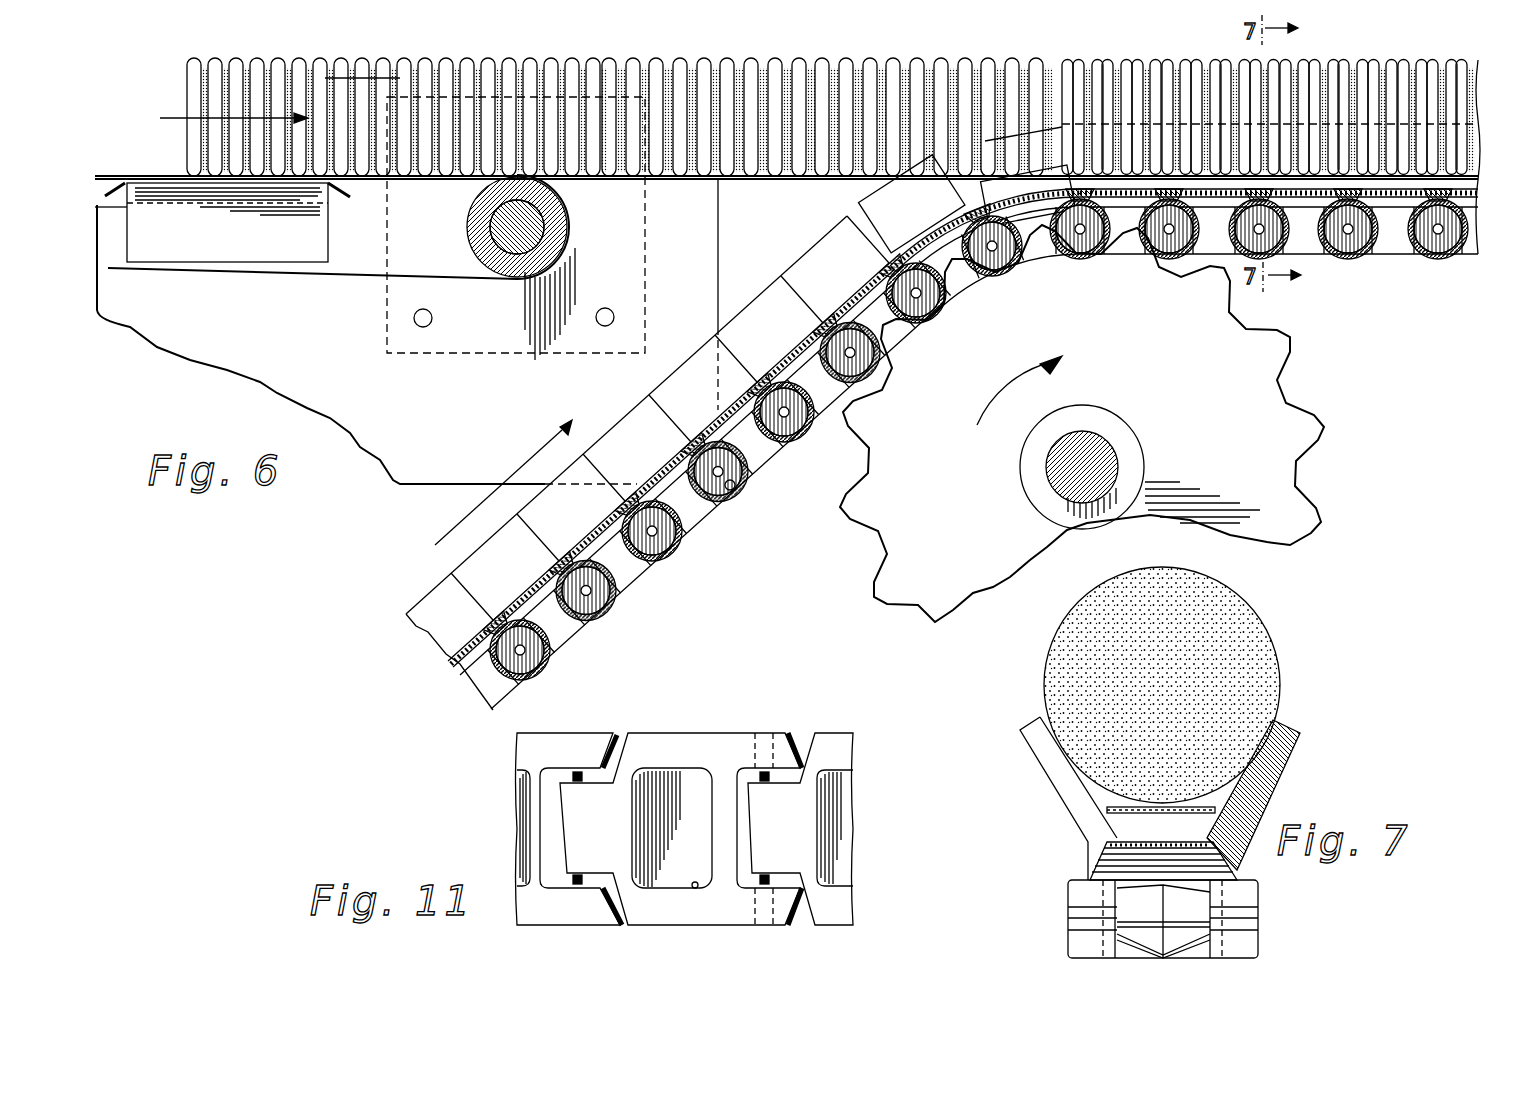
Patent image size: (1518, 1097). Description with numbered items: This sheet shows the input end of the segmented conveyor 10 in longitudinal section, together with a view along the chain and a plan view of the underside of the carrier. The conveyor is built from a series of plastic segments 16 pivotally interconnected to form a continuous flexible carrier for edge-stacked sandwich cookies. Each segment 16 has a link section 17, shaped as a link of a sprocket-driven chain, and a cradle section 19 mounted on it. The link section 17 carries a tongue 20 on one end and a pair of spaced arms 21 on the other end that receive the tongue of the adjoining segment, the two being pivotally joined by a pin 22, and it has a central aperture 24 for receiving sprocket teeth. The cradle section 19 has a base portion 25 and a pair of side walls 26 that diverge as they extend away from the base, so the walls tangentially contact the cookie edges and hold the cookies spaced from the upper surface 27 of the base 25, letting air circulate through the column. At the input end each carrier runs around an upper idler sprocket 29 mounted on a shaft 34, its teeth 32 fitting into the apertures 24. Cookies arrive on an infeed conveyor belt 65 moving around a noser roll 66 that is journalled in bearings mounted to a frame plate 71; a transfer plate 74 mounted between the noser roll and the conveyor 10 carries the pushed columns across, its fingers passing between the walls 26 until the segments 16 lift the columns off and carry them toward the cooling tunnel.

In FIG. 6, the segmented conveyor 10 is at (624, 605).
In FIG. 6, the plastic segment 16 is at (903, 432).
In FIG. 11, the link section 17 is at (648, 808).
In FIG. 7, the link section 17 is at (1185, 768).
In FIG. 6, the cradle section 19 is at (1310, 250).
In FIG. 7, the cradle section 19 is at (1074, 861).
In FIG. 6, the tongue 20 is at (723, 497).
In FIG. 11, the tongue 20 is at (557, 820).
In FIG. 7, the tongue 20 is at (1155, 893).
In FIG. 11, the arms 21 is at (793, 733).
In FIG. 6, the pin 22 is at (730, 485).
In FIG. 11, the pin 22 is at (585, 885).
In FIG. 7, the pin 22 is at (1078, 912).
In FIG. 6, the central aperture 24 is at (750, 457).
In FIG. 11, the central aperture 24 is at (695, 888).
In FIG. 7, the central aperture 24 is at (1220, 900).
In FIG. 6, the base portion 25 is at (687, 473).
In FIG. 7, the base portion 25 is at (1197, 862).
In FIG. 6, the side walls 26 is at (688, 373).
In FIG. 7, the side walls 26 is at (1185, 797).
In FIG. 7, the upper surface 27 is at (1198, 837).
In FIG. 6, the upper idler sprocket 29 is at (1126, 423).
In FIG. 6, the teeth 32 is at (1332, 427).
In FIG. 6, the shaft 34 is at (1110, 456).
In FIG. 6, the infeed conveyor belt 65 is at (123, 180).
In FIG. 6, the noser roll 66 is at (468, 228).
In FIG. 6, the frame plate 71 is at (193, 353).
In FIG. 6, the transfer plate 74 is at (688, 85).
In FIG. 7, the transfer plate 74 is at (1103, 785).